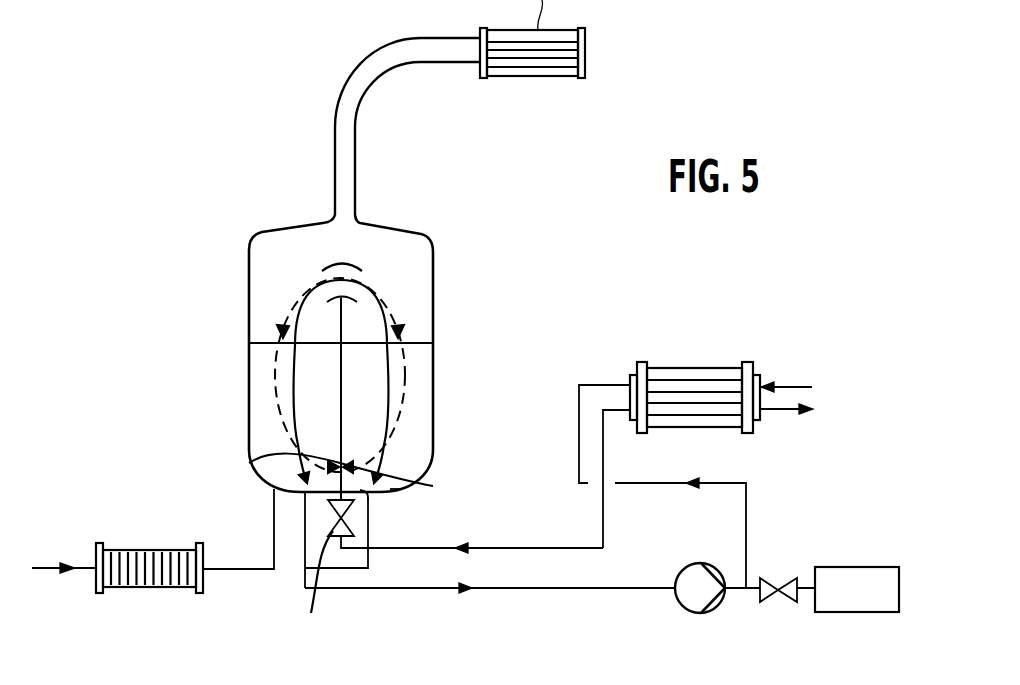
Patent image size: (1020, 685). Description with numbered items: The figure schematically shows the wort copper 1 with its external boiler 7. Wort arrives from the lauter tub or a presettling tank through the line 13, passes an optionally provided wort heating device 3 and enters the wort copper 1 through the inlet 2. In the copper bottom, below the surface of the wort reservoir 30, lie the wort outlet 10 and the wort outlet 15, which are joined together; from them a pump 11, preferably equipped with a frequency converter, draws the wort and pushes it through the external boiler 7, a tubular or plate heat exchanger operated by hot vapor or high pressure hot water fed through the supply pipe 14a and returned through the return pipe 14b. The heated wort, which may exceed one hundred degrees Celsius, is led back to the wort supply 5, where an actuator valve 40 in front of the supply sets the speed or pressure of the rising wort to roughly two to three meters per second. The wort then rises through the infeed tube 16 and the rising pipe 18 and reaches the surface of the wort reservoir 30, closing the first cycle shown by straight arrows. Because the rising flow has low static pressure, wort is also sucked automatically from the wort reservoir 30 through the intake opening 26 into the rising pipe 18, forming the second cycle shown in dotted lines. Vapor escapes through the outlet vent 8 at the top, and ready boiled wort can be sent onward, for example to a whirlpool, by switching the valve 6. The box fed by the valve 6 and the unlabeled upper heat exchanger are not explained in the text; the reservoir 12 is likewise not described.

The wort copper 1 is at (436, 250).
The inlet 2 is at (268, 490).
The wort heating device 3 is at (146, 549).
The wort supply 5 is at (372, 507).
The switching valve 6 is at (793, 577).
The external boiler 7 is at (695, 367).
The outlet vent 8 is at (335, 142).
The wort outlet 10 is at (297, 498).
The pump 11 is at (720, 566).
The reservoir 12 is at (868, 566).
The line 13 is at (48, 563).
The supply pipe 14a is at (795, 384).
The return pipe 14b is at (783, 412).
The wort outlet 15 is at (376, 493).
The infeed tube 16 is at (394, 487).
The rising pipe 18 is at (345, 323).
The intake opening 26 is at (280, 477).
The wort reservoir 30 is at (262, 420).
The actuator valve 40 is at (333, 585).